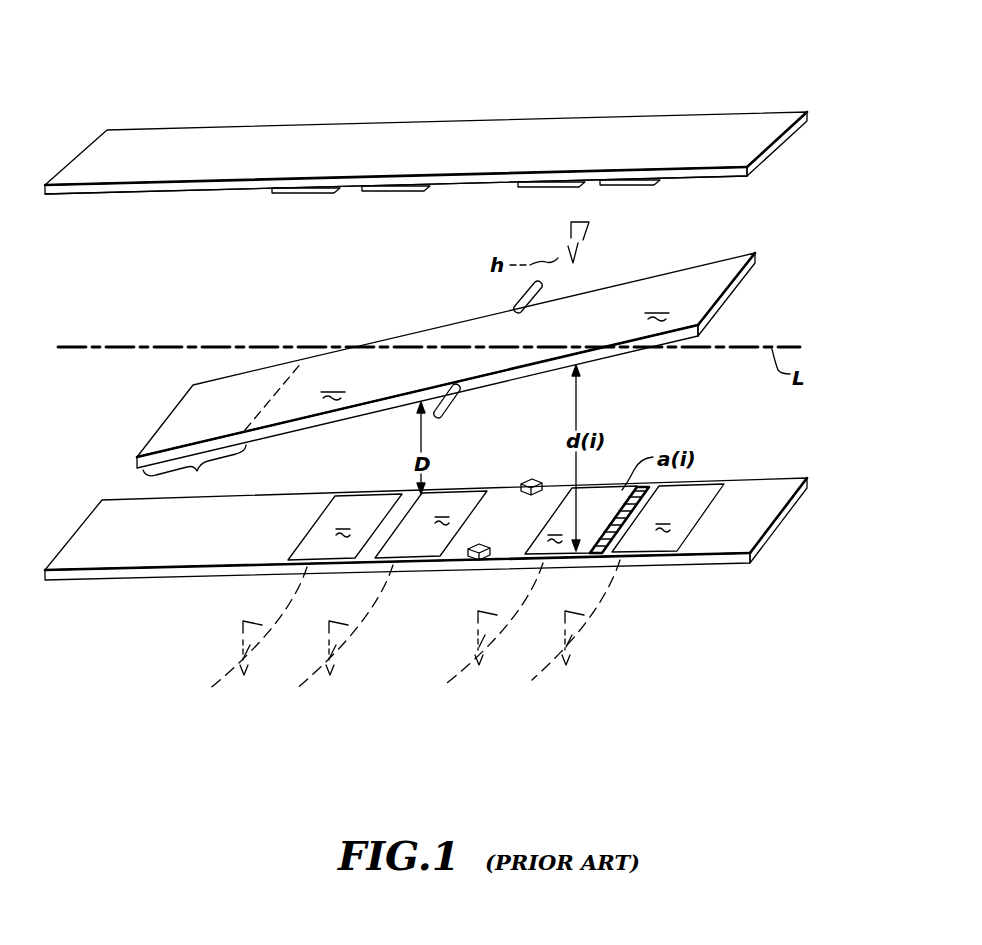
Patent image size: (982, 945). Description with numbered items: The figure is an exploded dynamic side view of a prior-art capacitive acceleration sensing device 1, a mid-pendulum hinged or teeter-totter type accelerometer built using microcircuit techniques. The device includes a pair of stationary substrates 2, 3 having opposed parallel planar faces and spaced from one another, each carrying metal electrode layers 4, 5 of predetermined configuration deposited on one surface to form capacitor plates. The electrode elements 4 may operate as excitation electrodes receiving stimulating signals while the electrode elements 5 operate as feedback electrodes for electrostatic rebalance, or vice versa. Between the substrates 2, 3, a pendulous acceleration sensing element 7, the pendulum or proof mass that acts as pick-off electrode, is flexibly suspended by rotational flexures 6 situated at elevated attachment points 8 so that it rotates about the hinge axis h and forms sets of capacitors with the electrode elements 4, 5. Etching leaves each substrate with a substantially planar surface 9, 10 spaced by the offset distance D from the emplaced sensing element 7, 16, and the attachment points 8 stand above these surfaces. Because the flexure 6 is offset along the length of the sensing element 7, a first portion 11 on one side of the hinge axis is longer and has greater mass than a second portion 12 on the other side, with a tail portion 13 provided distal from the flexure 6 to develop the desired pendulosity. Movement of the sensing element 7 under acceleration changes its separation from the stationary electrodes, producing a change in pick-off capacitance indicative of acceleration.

The capacitive acceleration sensing device 1 is at (811, 76).
The stationary substrate 2 is at (787, 515).
The stationary substrate 3 is at (780, 142).
The electrode element 4 is at (396, 193).
The electrode element 5 is at (300, 196).
The rotational flexure 6 is at (522, 296).
The pendulous acceleration sensing element 7 is at (468, 340).
The elevated attachment point 8 is at (530, 479).
The substantially planar surface 9 is at (757, 487).
The substantially planar surface 10 is at (700, 180).
The first portion 11 is at (244, 409).
The second portion 12 is at (500, 341).
The tail portion 13 is at (194, 472).
The acceleration sensing element 16 is at (730, 300).